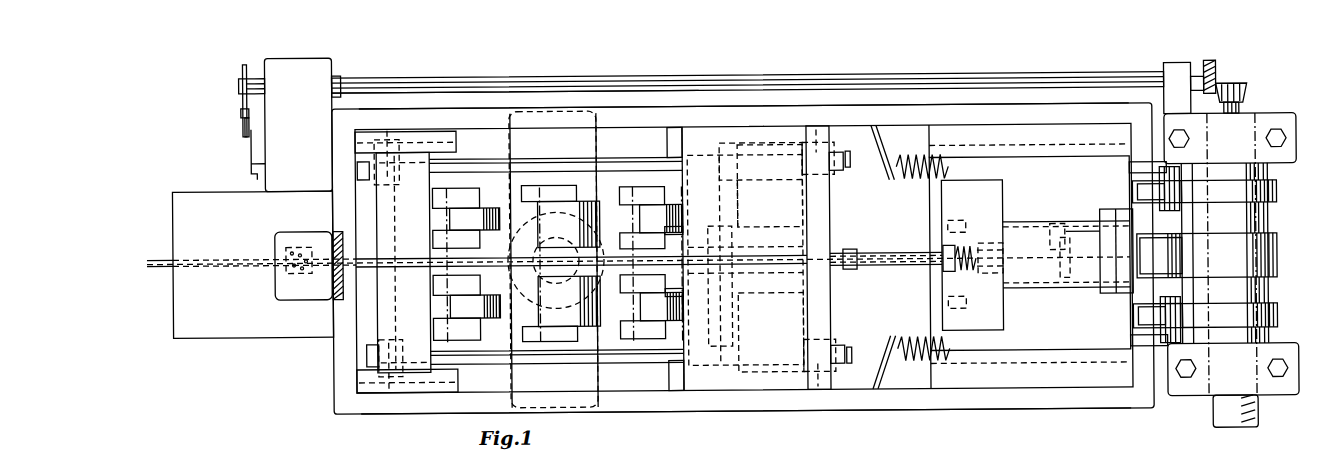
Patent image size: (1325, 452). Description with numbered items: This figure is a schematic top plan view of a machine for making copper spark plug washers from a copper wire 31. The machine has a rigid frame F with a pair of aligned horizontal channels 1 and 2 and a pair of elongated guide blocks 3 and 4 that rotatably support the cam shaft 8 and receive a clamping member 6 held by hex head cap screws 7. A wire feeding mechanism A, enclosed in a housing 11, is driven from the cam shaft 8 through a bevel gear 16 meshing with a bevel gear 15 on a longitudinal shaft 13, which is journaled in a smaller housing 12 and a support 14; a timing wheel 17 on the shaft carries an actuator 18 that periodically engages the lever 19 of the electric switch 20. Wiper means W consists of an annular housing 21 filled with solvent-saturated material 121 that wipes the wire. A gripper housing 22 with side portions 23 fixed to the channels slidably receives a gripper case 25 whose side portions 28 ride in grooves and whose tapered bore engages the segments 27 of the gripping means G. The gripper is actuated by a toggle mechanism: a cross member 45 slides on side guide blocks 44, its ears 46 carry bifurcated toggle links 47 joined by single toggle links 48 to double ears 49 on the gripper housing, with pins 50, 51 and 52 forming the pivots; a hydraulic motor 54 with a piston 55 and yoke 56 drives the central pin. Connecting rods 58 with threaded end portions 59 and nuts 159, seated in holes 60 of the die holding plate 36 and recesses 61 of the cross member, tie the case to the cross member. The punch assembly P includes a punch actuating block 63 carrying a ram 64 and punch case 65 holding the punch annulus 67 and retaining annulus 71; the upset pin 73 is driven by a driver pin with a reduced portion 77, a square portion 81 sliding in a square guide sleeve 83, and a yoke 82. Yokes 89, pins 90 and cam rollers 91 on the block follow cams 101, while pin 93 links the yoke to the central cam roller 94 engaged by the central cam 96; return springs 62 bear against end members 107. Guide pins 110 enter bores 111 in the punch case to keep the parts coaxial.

The horizontal channel 1 is at (756, 126).
The horizontal channel 2 is at (720, 410).
The guide block 3 is at (1012, 126).
The guide block 4 is at (1040, 396).
The clamping member 6 is at (1272, 120).
The hex head cap screw 7 is at (1192, 144).
The cam shaft 8 is at (1258, 420).
The housing 11 is at (173, 198).
The housing 12 is at (300, 60).
The longitudinal shaft 13 is at (720, 75).
The support 14 is at (1172, 66).
The bevel gear 15 is at (1213, 64).
The bevel gear 16 is at (1246, 93).
The timing wheel 17 is at (244, 66).
The actuator 18 is at (242, 108).
The lever 19 is at (246, 124).
The electric switch 20 is at (252, 152).
The annular metal housing 21 is at (300, 296).
The gripper housing 22 is at (686, 392).
The side portions 23 is at (775, 120).
The gripper case 25 is at (740, 185).
The segments 27 is at (785, 294).
The side portions 28 is at (740, 144).
The copper wire 31 is at (168, 255).
The die holding plate 36 is at (818, 392).
The side guide blocks 44 is at (420, 130).
The cross member 45 is at (448, 220).
The ears 46 is at (433, 200).
The bifurcated toggle links 47 is at (498, 188).
The single toggle links 48 is at (620, 212).
The double ears 49 is at (675, 232).
The cylindrical pin 50 is at (448, 262).
The cylindrical pin 51 is at (556, 184).
The cylindrical pins 52 is at (641, 184).
The hydraulic fluid motor 54 is at (475, 297).
The piston 55 is at (456, 318).
The yoke 56 is at (475, 219).
The connecting rods 58 is at (683, 128).
The reduced threaded end portions 59 is at (358, 170).
The circular holes 60 is at (808, 142).
The circular recesses 61 is at (388, 128).
The return springs 62 is at (925, 160).
The punch actuating block 63 is at (1057, 191).
The ram 64 is at (1003, 312).
The punch case 65 is at (937, 273).
The punch annulus 67 is at (843, 258).
The retaining annulus 71 is at (908, 272).
The upset pin 73 is at (860, 270).
The reduced cylindrical portion 77 is at (987, 252).
The square portion 81 is at (1055, 238).
The yoke 82 is at (1102, 294).
The square guide sleeve 83 is at (1063, 288).
The yokes 89 is at (1180, 178).
The cylindrical pins 90 is at (1134, 172).
The cam rollers 91 is at (1138, 196).
The cylindrical pin 93 is at (1100, 230).
The central cam roller 94 is at (1182, 256).
The central cam 96 is at (1272, 262).
The cams 101 is at (1278, 200).
The end members 107 is at (893, 158).
The guide pins 110 is at (935, 242).
The cylindrical bores 111 is at (948, 226).
The solvent-saturated material 121 is at (285, 254).
The nuts 159 is at (375, 160).
The wire feeding mechanism A is at (196, 184).
The frame F is at (1064, 100).
The segmented gripping means G is at (781, 228).
The punch assembly P is at (962, 198).
The wiper means W is at (290, 238).